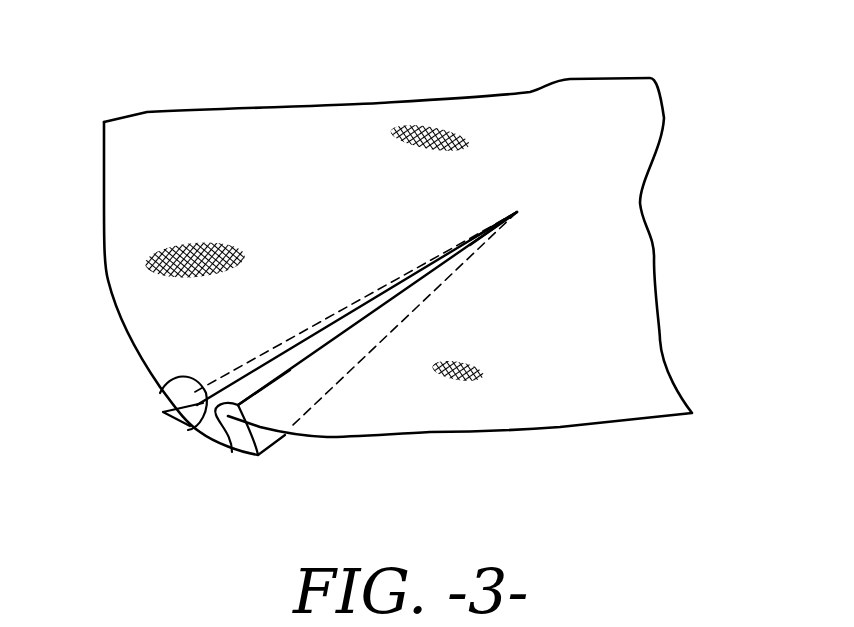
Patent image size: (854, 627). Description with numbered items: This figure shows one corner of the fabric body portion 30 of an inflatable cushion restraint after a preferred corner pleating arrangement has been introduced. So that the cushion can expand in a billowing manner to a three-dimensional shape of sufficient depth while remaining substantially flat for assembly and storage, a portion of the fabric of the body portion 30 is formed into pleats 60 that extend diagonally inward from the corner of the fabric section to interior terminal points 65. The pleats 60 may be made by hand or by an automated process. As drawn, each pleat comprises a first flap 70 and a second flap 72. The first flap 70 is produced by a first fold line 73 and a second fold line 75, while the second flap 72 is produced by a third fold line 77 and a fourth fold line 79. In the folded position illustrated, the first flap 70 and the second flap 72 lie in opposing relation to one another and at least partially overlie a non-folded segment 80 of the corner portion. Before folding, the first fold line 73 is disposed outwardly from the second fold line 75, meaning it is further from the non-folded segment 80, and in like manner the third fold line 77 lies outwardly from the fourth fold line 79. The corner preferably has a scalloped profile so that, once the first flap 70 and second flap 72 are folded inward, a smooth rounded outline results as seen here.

The body portion 30 is at (237, 92).
The pleats 60 is at (398, 266).
The interior terminal points 65 is at (517, 210).
The first flap 70 is at (290, 403).
The second flap 72 is at (160, 388).
The first fold line 73 is at (232, 448).
The second fold line 75 is at (350, 373).
The third fold line 77 is at (183, 430).
The fourth fold line 79 is at (240, 364).
The non-folded segment 80 is at (212, 440).